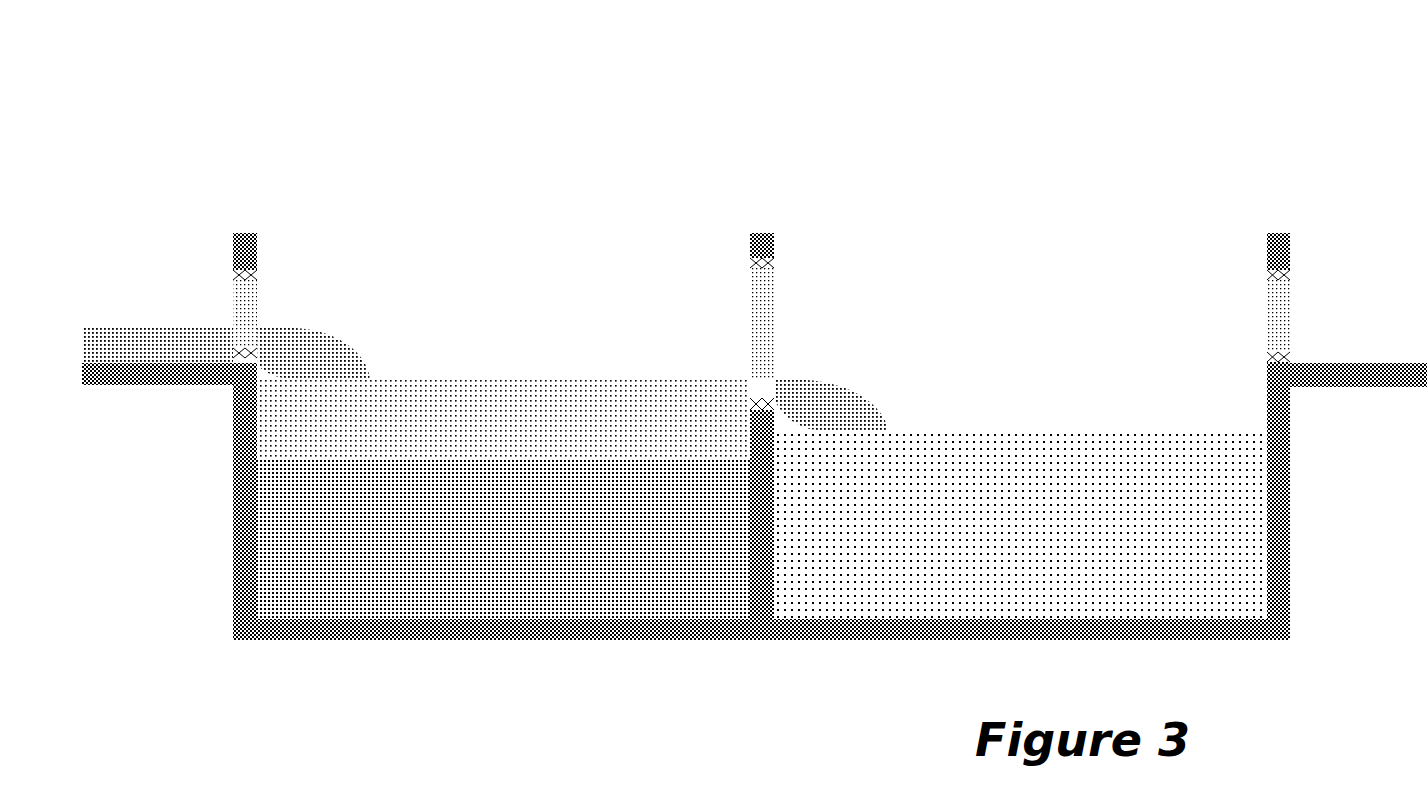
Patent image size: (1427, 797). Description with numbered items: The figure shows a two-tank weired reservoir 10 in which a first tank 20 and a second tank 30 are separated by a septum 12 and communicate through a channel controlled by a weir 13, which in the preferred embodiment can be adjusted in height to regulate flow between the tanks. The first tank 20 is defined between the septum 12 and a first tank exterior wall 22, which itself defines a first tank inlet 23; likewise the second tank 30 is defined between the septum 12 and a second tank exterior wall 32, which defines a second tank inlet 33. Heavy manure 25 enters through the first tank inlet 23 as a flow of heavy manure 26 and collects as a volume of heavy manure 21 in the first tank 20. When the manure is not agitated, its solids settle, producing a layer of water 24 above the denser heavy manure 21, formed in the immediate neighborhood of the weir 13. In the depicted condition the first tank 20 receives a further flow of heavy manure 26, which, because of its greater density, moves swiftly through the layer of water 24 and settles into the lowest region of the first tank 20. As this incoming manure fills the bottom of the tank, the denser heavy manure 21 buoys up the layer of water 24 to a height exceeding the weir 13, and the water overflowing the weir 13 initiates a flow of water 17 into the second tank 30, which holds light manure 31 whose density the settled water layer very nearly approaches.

The two-tank weired reservoir 10 is at (380, 93).
The septum 12 is at (763, 226).
The weir 13 is at (762, 396).
The flow of water 17 is at (831, 405).
The first tank 20 is at (580, 358).
The volume of heavy manure 21 is at (503, 539).
The first tank exterior wall 22 is at (247, 226).
The first tank inlet 23 is at (258, 286).
The layer of water 24 is at (503, 419).
The heavy manure 25 is at (169, 356).
The flow of heavy manure 26 is at (313, 354).
The second tank 30 is at (1078, 382).
The light manure 31 is at (1020, 524).
The second tank exterior wall 32 is at (1282, 226).
The second tank inlet 33 is at (1268, 281).